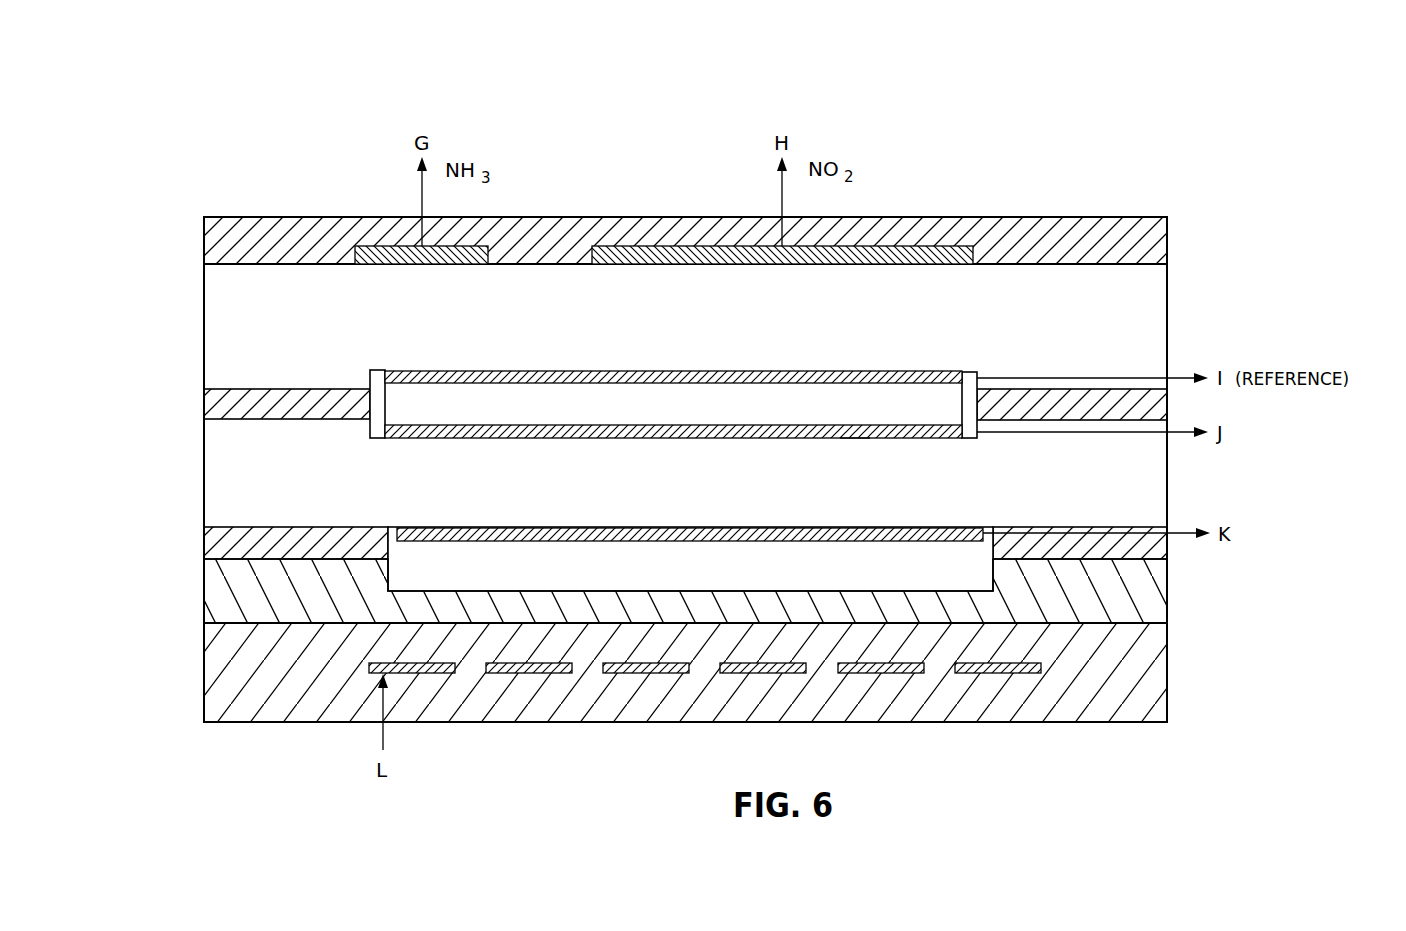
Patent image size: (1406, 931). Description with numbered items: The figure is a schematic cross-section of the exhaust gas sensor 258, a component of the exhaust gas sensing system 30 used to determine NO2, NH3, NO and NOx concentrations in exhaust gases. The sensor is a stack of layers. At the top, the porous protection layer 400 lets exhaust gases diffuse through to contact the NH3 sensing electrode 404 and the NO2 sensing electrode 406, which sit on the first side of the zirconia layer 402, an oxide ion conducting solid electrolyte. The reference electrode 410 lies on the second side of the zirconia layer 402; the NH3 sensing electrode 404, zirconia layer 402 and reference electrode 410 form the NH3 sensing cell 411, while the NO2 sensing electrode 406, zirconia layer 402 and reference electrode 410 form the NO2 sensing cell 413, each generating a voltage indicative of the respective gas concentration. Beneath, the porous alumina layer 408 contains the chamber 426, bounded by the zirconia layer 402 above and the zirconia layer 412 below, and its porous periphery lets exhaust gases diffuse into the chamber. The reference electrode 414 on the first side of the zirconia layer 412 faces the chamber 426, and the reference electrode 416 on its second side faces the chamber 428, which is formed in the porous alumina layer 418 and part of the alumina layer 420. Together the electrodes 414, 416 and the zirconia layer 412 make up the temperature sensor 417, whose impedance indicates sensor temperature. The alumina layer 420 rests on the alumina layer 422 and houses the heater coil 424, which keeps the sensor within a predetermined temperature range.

The exhaust gas sensing system 30 is at (900, 90).
The exhaust gas sensor 258 is at (1020, 168).
The porous protection layer 400 is at (204, 241).
The zirconia layer 402 is at (204, 325).
The NH3 sensing electrode 404 is at (422, 265).
The NO2 sensing electrode 406 is at (856, 265).
The porous alumina layer 408 is at (204, 405).
The reference electrode 410 is at (673, 371).
The NH3 sensing cell 411 is at (486, 232).
The zirconia layer 412 is at (204, 473).
The NO2 sensing cell 413 is at (904, 232).
The reference electrode 414 is at (673, 438).
The reference electrode 416 is at (803, 542).
The temperature sensor 417 is at (860, 416).
The porous alumina layer 418 is at (204, 545).
The alumina layer 420 is at (204, 591).
The alumina layer 422 is at (204, 673).
The heater coil 424 is at (418, 674).
The chamber 426 is at (696, 415).
The chamber 428 is at (699, 577).